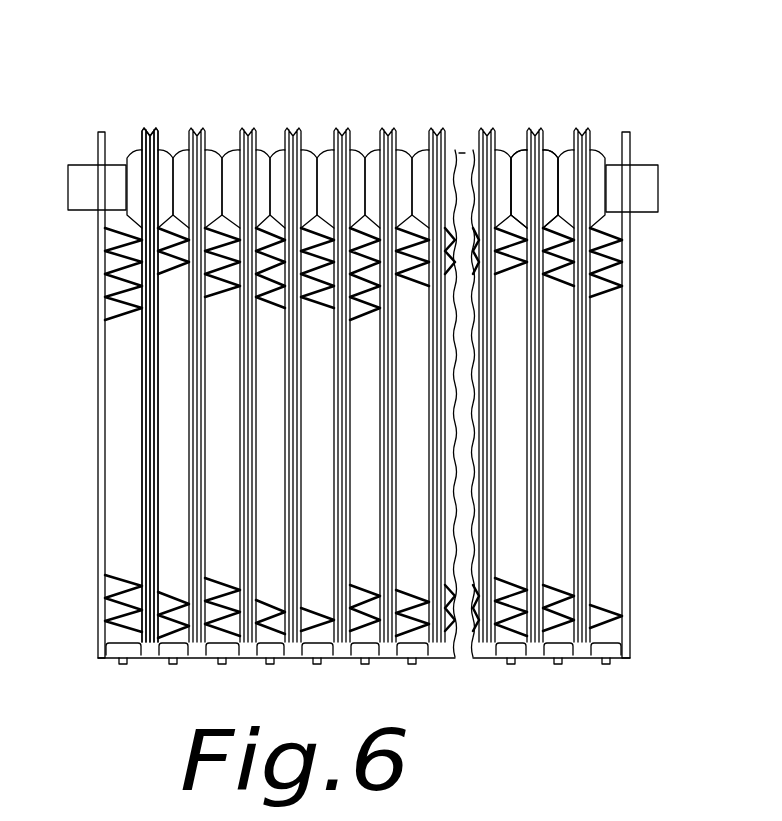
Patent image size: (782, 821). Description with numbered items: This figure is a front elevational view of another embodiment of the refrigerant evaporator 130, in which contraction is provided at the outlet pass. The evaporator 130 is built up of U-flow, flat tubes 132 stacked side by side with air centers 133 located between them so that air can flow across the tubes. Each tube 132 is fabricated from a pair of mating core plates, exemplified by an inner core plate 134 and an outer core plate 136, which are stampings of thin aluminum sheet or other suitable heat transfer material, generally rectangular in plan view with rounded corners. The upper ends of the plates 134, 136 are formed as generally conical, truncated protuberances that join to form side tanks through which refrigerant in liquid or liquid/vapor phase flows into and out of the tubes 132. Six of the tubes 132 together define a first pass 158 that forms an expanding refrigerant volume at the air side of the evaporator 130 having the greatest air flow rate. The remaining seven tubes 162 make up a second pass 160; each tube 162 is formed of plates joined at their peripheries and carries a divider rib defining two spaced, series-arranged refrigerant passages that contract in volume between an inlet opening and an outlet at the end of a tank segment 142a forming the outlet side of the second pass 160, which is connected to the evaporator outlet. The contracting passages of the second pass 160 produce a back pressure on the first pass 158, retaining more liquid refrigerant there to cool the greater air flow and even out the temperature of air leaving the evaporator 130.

The evaporator 130 is at (441, 121).
The flat tube 132 is at (188, 380).
The air center 133 is at (183, 283).
The inner core plate 134 is at (143, 457).
The outer core plate 136 is at (152, 494).
The tank segment 142a is at (550, 138).
The first pass 158 is at (150, 120).
The second pass 160 is at (437, 665).
The tube 162 is at (589, 407).